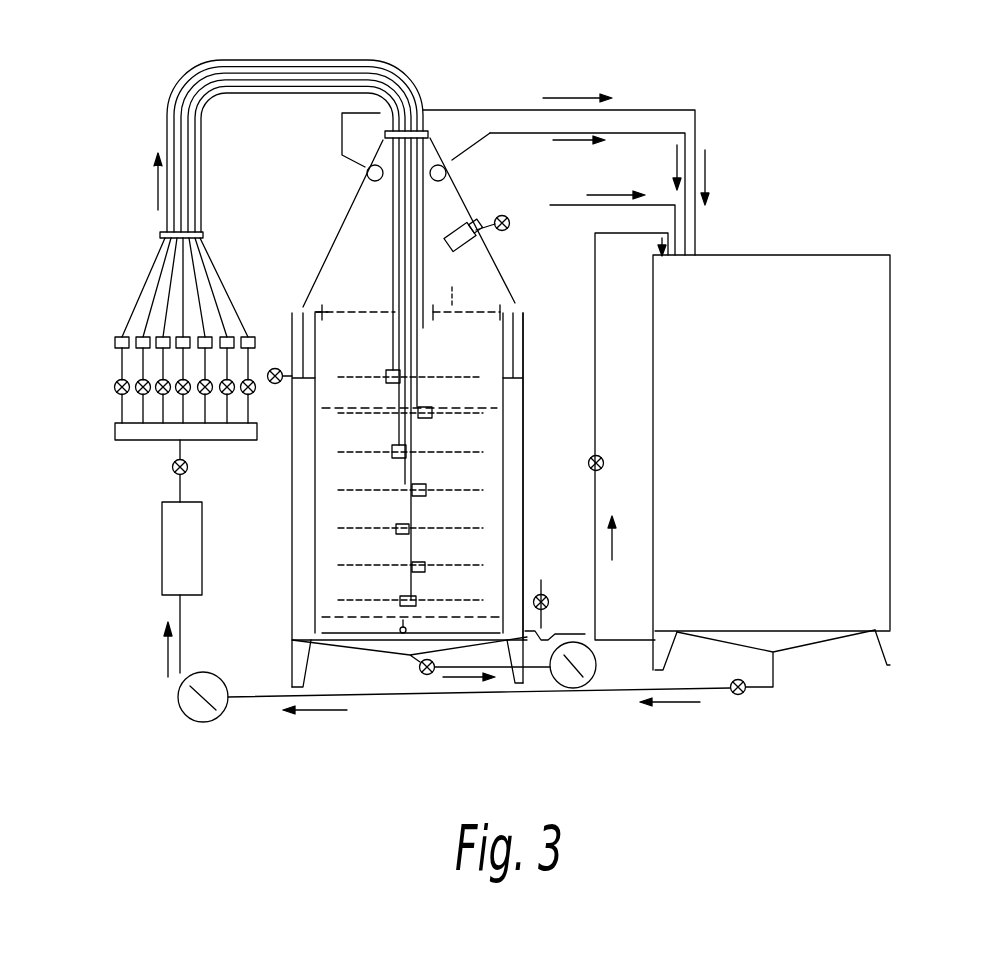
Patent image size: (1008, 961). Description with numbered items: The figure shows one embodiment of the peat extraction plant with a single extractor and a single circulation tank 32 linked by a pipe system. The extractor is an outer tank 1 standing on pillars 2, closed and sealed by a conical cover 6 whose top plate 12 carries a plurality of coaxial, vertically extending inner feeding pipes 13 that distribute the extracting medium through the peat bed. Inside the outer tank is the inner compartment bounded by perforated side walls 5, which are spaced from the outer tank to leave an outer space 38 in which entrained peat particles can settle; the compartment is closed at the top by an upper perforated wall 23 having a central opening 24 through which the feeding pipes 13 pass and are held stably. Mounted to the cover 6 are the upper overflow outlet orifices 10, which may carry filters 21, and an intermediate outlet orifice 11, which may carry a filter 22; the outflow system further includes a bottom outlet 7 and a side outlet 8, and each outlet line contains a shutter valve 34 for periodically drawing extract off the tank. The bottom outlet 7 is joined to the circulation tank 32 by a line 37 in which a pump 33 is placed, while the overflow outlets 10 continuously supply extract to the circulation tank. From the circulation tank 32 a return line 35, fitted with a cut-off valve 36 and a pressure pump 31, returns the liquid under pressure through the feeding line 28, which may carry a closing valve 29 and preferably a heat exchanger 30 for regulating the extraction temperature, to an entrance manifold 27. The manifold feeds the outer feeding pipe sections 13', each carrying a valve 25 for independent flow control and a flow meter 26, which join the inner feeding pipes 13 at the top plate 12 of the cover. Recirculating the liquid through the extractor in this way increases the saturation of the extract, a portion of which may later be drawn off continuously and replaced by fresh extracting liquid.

The outer tank 1 is at (525, 545).
The pillars 2 is at (527, 687).
The side walls 5 is at (523, 490).
The cover 6 is at (495, 265).
The bottom outlet 7 is at (412, 657).
The side outlet 8 is at (585, 633).
The upper overflow outlet orifices 10 is at (447, 165).
The intermediate outlet orifice 11 is at (477, 228).
The top plate 12 is at (420, 120).
The inner feeding pipes 13 is at (365, 333).
The outer feeding pipe sections 13' is at (160, 284).
The filters 21 is at (446, 173).
The filter 22 is at (477, 220).
The upper perforated wall 23 is at (464, 283).
The central opening 24 is at (387, 302).
The valve 25 is at (114, 392).
The flow meters 26 is at (115, 345).
The entrance manifold 27 is at (115, 437).
The feeding line 28 is at (183, 645).
The closing valve 29 is at (172, 470).
The heat exchanger 30 is at (162, 577).
The pressure pump 31 is at (217, 717).
The circulation tank 32 is at (803, 254).
The pump 33 is at (587, 688).
The shutter valve 34 is at (273, 368).
The return line 35 is at (773, 672).
The valve 36 is at (743, 693).
The line 37 is at (596, 410).
The outer space 38 is at (305, 475).